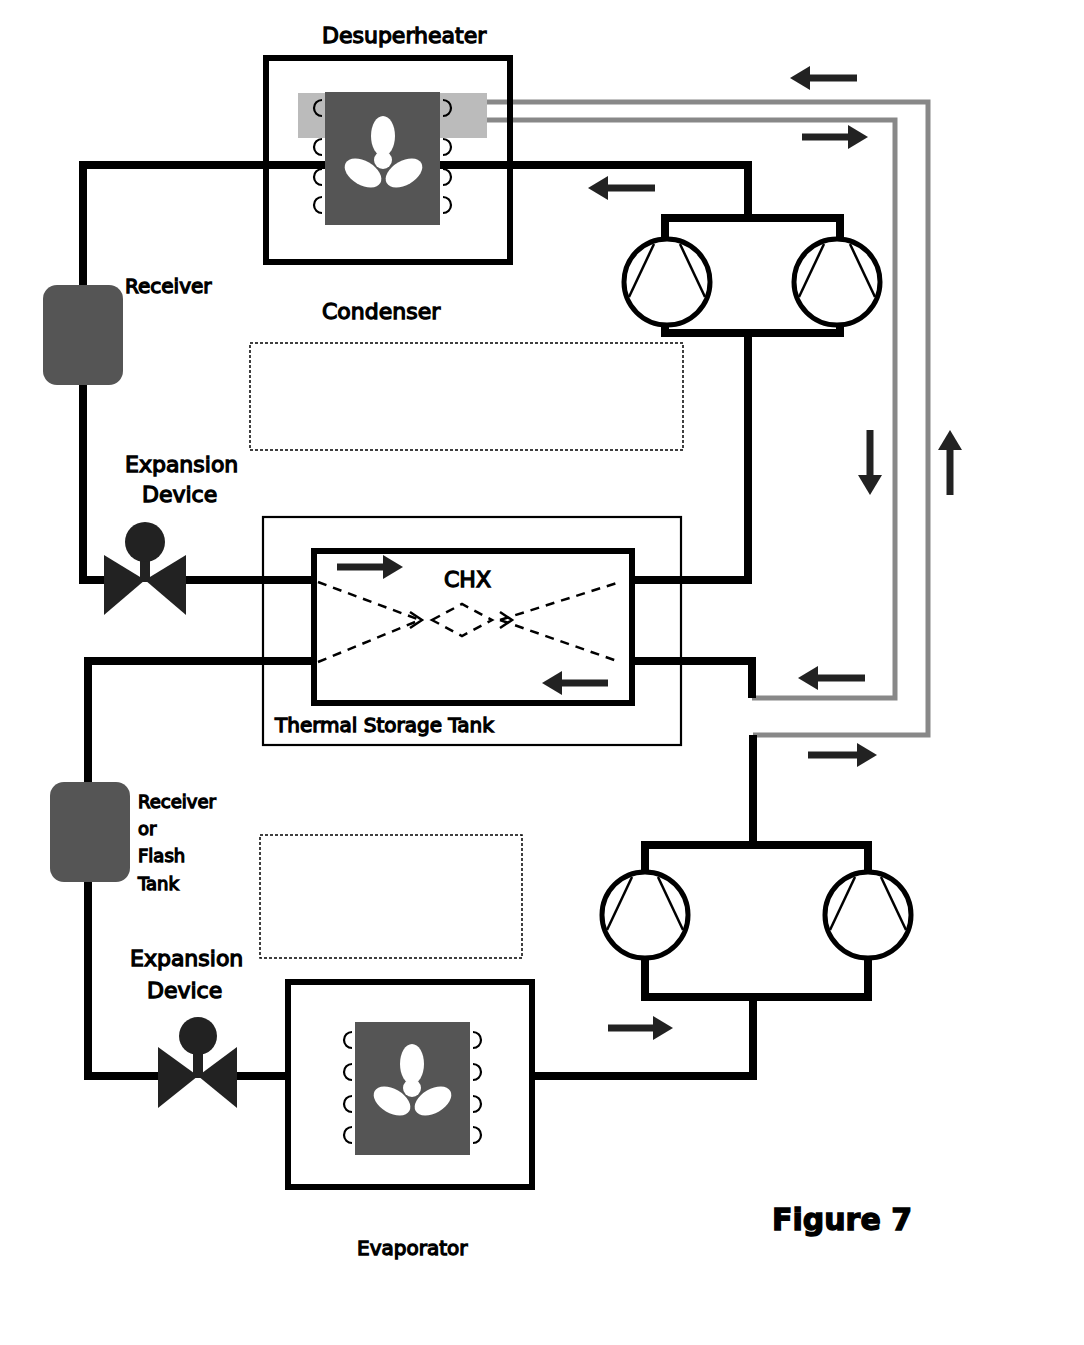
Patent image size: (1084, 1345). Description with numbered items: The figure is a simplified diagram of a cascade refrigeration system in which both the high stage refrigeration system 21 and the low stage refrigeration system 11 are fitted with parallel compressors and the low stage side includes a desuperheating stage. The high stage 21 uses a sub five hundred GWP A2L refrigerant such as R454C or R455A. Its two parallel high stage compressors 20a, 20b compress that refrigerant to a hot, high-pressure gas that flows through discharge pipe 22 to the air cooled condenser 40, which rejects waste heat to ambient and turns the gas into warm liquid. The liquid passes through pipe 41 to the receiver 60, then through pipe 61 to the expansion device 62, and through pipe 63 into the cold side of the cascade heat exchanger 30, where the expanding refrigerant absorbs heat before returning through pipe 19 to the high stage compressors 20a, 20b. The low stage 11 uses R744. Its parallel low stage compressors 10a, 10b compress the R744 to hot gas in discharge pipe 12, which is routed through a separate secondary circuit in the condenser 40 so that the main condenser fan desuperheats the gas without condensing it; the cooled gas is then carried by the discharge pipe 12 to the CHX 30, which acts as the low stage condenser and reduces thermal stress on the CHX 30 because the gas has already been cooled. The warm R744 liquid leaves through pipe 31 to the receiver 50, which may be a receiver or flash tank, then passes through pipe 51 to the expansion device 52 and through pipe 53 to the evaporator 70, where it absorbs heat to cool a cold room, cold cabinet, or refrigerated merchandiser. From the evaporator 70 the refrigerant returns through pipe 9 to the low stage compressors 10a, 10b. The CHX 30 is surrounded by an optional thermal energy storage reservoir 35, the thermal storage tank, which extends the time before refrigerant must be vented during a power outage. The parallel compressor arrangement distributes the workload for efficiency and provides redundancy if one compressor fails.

The pipe 9 is at (642, 1052).
The low stage compressor 10a is at (632, 915).
The low stage compressor 10b is at (882, 915).
The low stage refrigeration system 11 is at (391, 896).
The discharge pipe 12 is at (775, 790).
The pipe 19 is at (704, 456).
The high stage compressor 20a is at (652, 282).
The high stage compressor 20b is at (821, 282).
The high stage refrigeration system 21 is at (466, 396).
The discharge pipe 22 is at (629, 176).
The cascade heat exchanger (CHX) 30 is at (473, 627).
The pipe 31 is at (185, 721).
The thermal energy storage reservoir 35 is at (472, 631).
The air cooled condenser 40 is at (388, 171).
The pipe 41 is at (296, 209).
The receiver 50 is at (100, 824).
The pipe 51 is at (108, 979).
The expansion device 52 is at (199, 1056).
The pipe 53 is at (262, 1092).
The receiver 60 is at (89, 320).
The pipe 61 is at (75, 482).
The expansion device 62 is at (152, 568).
The pipe 63 is at (250, 596).
The evaporator 70 is at (410, 1101).